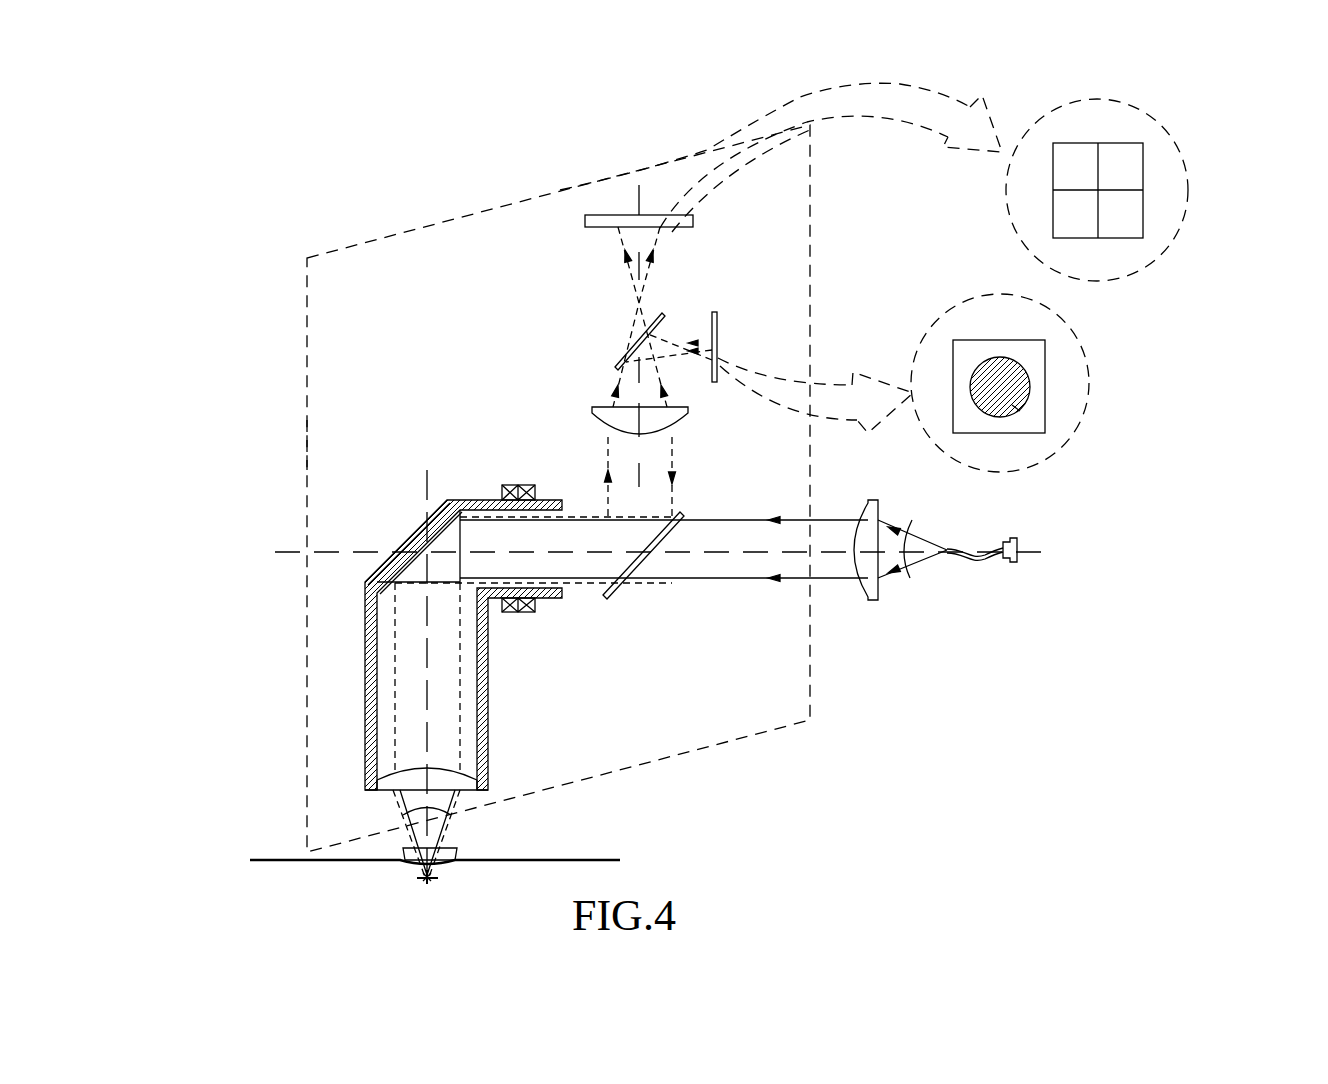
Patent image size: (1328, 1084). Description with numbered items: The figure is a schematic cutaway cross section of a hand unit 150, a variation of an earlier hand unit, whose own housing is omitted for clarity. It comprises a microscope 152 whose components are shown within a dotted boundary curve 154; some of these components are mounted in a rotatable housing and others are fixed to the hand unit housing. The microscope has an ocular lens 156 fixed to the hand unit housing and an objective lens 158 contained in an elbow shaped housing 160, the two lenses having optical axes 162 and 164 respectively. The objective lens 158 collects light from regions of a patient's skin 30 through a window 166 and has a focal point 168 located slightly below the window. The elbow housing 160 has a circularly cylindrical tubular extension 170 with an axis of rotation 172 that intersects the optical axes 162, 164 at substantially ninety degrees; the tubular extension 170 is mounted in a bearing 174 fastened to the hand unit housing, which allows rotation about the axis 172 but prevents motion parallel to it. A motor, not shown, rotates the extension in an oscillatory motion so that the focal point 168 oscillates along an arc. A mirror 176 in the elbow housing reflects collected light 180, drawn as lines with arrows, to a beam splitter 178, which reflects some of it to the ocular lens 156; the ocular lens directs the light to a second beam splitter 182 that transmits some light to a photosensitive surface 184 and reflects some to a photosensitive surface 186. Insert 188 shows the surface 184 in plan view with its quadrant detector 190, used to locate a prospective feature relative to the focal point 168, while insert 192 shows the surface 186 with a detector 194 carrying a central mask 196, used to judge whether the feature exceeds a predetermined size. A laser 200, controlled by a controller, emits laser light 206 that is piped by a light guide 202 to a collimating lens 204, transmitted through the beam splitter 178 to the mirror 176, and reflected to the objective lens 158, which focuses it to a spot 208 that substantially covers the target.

The patient's skin 30 is at (617, 860).
The hand unit 150 is at (260, 220).
The microscope 152 is at (273, 373).
The dotted boundary curve 154 is at (307, 438).
The ocular lens 156 is at (592, 408).
The objective lens 158 is at (485, 797).
The elbow shaped housing 160 is at (358, 617).
The optical axis 162 is at (425, 730).
The optical axis 164 is at (639, 463).
The window 166 is at (457, 852).
The focal point 168 is at (430, 882).
The tubular extension 170 is at (553, 597).
The axis of rotation 172 is at (283, 548).
The bearing 174 is at (518, 485).
The mirror 176 is at (436, 510).
The beam splitter 178 is at (637, 572).
The light 180 is at (390, 673).
The beam splitter 182 is at (617, 363).
The photosensitive surface 184 is at (602, 227).
The photosensitive surface 186 is at (714, 312).
The insert 188 is at (1168, 99).
The quadrant detector 190 is at (1143, 229).
The insert 192 is at (1105, 304).
The detector 194 is at (1045, 390).
The mask 196 is at (1013, 407).
The laser 200 is at (1017, 560).
The light guide 202 is at (975, 562).
The collimating lens 204 is at (862, 585).
The laser light 206 is at (895, 528).
The spot 208 is at (427, 880).